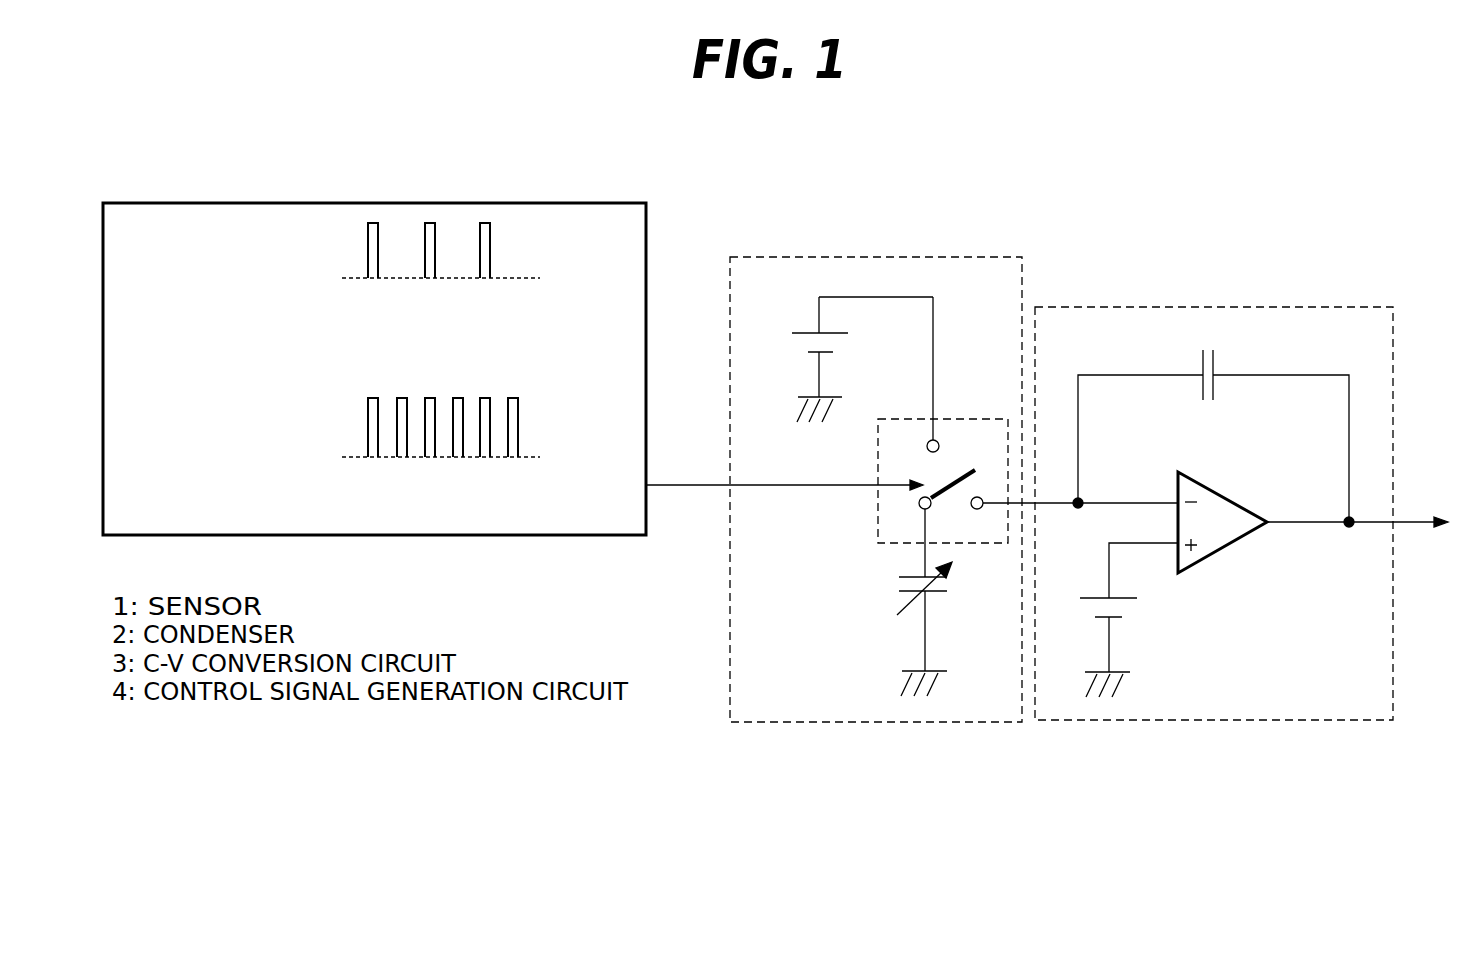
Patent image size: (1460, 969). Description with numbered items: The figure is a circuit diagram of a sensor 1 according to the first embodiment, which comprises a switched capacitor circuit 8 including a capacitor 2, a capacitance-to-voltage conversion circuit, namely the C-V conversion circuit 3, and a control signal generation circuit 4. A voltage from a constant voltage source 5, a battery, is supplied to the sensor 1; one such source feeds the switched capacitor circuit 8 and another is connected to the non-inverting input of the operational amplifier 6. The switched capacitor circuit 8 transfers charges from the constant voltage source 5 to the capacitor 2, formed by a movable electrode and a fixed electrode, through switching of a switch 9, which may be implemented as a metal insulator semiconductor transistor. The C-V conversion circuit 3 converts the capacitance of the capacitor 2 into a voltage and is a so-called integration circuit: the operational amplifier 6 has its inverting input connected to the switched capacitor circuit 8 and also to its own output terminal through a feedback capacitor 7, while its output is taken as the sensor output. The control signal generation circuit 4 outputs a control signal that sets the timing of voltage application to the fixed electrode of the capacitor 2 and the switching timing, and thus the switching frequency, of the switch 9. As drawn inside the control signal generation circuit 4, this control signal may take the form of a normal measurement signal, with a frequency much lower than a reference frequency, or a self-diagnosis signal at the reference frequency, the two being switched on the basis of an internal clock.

The sensor 1 is at (1240, 208).
The capacitor 2 is at (937, 591).
The C-V conversion circuit 3 is at (1108, 307).
The control signal generation circuit 4 is at (577, 203).
The constant voltage source 5 is at (808, 333).
The operational amplifier 6 is at (1230, 497).
The capacitor 7 is at (1215, 370).
The switched capacitor circuit 8 is at (968, 257).
The switch 9 is at (980, 419).